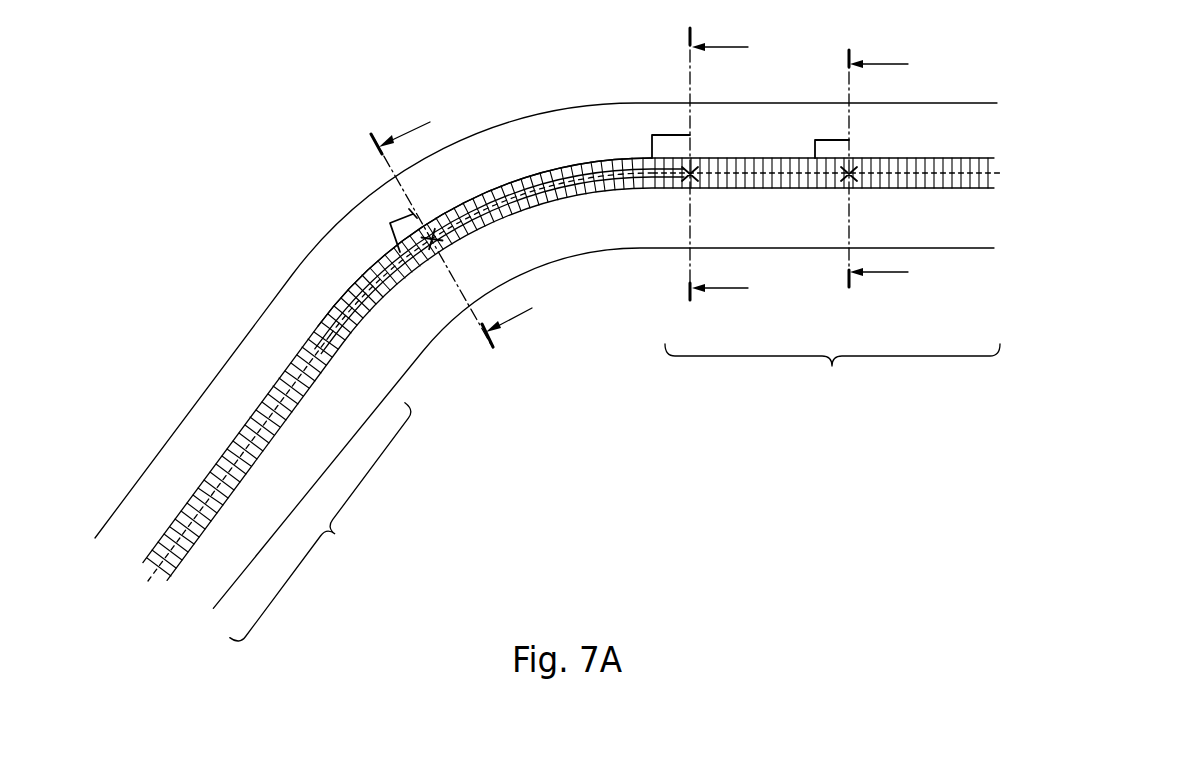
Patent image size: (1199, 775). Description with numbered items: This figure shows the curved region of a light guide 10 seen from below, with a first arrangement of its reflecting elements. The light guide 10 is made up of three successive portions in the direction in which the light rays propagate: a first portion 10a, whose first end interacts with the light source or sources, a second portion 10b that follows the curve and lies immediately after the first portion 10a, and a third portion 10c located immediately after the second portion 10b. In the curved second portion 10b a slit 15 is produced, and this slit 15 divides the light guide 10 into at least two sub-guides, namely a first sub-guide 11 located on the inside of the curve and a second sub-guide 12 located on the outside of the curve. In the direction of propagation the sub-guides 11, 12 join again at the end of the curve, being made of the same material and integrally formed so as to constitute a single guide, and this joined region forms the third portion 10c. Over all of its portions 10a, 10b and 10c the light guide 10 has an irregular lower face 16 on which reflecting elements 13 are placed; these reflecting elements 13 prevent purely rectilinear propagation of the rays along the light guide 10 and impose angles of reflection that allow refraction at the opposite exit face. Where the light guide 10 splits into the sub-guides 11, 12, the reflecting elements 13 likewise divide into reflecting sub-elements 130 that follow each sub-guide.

The light guide 10 is at (546, 355).
The first portion 10a is at (326, 527).
The second portion 10b is at (529, 388).
The third portion 10c is at (826, 219).
The first sub-guide 11 is at (437, 318).
The second sub-guide 12 is at (385, 212).
The reflecting elements 13 is at (300, 355).
The slit 15 is at (469, 198).
The lower face 16 is at (175, 470).
The reflecting sub-elements 130 is at (556, 176).